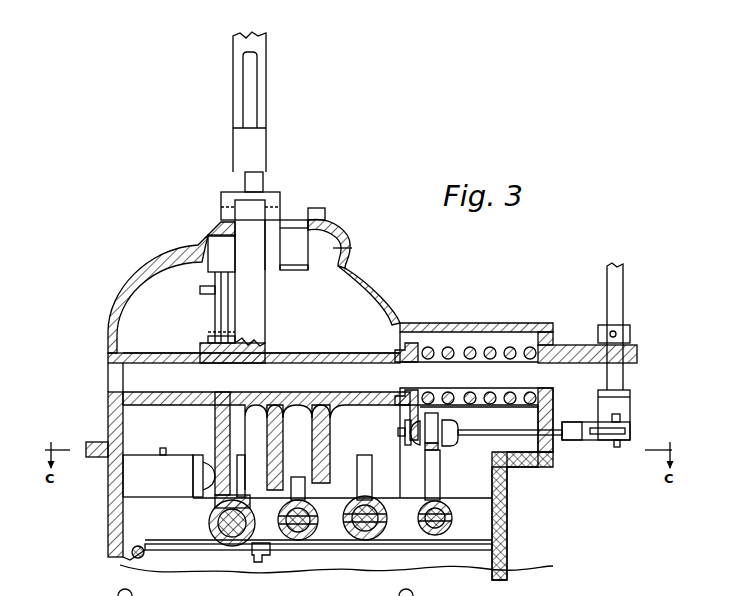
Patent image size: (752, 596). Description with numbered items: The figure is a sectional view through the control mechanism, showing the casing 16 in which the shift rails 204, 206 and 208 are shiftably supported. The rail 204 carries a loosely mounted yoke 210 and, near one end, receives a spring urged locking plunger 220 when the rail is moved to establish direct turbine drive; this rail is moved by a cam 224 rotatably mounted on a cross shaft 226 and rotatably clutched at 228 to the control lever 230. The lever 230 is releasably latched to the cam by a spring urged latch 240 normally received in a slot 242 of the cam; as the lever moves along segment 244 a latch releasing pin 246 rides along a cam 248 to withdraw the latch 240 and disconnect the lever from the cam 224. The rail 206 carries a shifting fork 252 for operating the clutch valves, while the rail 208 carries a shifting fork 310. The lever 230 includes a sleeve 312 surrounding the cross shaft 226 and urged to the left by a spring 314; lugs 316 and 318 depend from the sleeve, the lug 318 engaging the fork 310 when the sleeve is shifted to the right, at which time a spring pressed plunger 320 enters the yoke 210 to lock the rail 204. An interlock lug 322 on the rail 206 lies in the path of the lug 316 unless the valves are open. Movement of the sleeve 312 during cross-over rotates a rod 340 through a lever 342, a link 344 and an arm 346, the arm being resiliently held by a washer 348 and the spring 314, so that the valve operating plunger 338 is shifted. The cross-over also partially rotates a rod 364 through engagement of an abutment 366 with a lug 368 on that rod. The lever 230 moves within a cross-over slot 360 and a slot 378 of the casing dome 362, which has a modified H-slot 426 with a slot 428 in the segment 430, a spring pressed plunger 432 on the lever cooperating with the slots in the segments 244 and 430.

The casing 16 is at (108, 527).
The shift rail 204 is at (235, 546).
The shift rail 206 is at (306, 541).
The forward and reverse rail 208 is at (372, 541).
The yoke 210 is at (208, 521).
The locking plunger 220 is at (142, 591).
The cam 224 is at (218, 431).
The cross shaft 226 is at (346, 384).
The clutch connection 228 is at (240, 345).
The control lever 230 is at (262, 84).
The latch 240 is at (217, 323).
The slot 242 is at (210, 343).
The segment 244 is at (210, 230).
The latch releasing pin 246 is at (200, 290).
The cam 248 is at (184, 304).
The shifting fork 252 is at (316, 510).
The shifting fork 310 is at (374, 499).
The sleeve 312 is at (301, 354).
The spring 314 is at (472, 355).
The lug 316 is at (272, 432).
The lug 318 is at (326, 448).
The spring pressed plunger 320 is at (200, 476).
The interlock lug 322 is at (300, 478).
The plunger 338 is at (423, 591).
The rod 340 is at (620, 300).
The lever 342 is at (632, 433).
The link 344 is at (492, 434).
The arm 346 is at (410, 414).
The washer 348 is at (420, 354).
The cross-over slot 360 is at (280, 224).
The casing dome 362 is at (347, 226).
The rod 364 is at (438, 530).
The abutment 366 is at (416, 440).
The lug 368 is at (442, 480).
The slot 378 is at (312, 216).
The modified H-slot 426 is at (304, 262).
The slot 428 is at (352, 248).
The segment 430 is at (383, 294).
The spring pressed plunger 432 is at (250, 184).